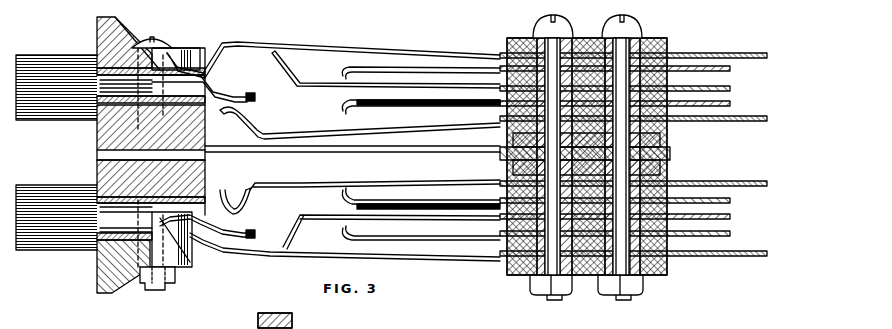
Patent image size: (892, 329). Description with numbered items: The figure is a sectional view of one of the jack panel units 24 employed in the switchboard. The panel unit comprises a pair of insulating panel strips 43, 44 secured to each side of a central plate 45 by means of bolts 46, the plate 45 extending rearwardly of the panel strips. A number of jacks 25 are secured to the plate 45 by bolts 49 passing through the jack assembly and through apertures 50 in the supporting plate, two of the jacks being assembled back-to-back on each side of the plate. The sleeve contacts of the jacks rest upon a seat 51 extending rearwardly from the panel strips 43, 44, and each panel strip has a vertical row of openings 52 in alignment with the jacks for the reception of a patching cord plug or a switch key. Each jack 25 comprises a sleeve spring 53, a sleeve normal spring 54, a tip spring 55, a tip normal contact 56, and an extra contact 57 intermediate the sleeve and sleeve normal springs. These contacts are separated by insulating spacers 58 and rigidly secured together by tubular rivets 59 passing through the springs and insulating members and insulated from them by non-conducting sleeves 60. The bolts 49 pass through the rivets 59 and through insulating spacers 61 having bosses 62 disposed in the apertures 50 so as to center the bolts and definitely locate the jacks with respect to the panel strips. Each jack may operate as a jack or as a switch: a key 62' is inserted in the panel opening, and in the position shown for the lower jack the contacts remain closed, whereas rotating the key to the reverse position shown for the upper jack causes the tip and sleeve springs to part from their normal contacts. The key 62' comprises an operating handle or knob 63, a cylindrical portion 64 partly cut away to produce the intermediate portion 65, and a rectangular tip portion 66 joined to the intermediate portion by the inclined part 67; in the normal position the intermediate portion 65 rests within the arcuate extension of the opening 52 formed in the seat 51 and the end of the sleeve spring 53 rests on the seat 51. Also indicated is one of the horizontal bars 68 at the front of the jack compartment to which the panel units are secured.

The panel unit 24 is at (120, 298).
The jack 25 is at (490, 258).
The insulating panel strip 43 is at (99, 133).
The insulating panel strip 44 is at (100, 174).
The central plate 45 is at (368, 154).
The bolt 46 is at (162, 284).
The bolt 49 is at (548, 60).
The aperture 50 is at (660, 150).
The seat 51 is at (194, 262).
The opening 52 is at (110, 262).
The sleeve spring 53 is at (242, 250).
The sleeve normal spring 54 is at (300, 216).
The tip spring 55 is at (285, 183).
The tip normal contact 56 is at (357, 206).
The extra contact 57 is at (355, 239).
The insulating spacer 58 is at (508, 268).
The tubular rivet 59 is at (667, 56).
The non-conducting sleeve 60 is at (655, 260).
The insulating spacer 61 is at (662, 163).
The boss 62 is at (609, 137).
The key 62' is at (56, 75).
The operating handle or knob 63 is at (48, 247).
The cylindrical portion 64 is at (150, 50).
The intermediate portion 65 is at (192, 60).
The rectangular tip portion 66 is at (250, 93).
The inclined part 67 is at (216, 90).
The horizontal bar 68 is at (292, 321).